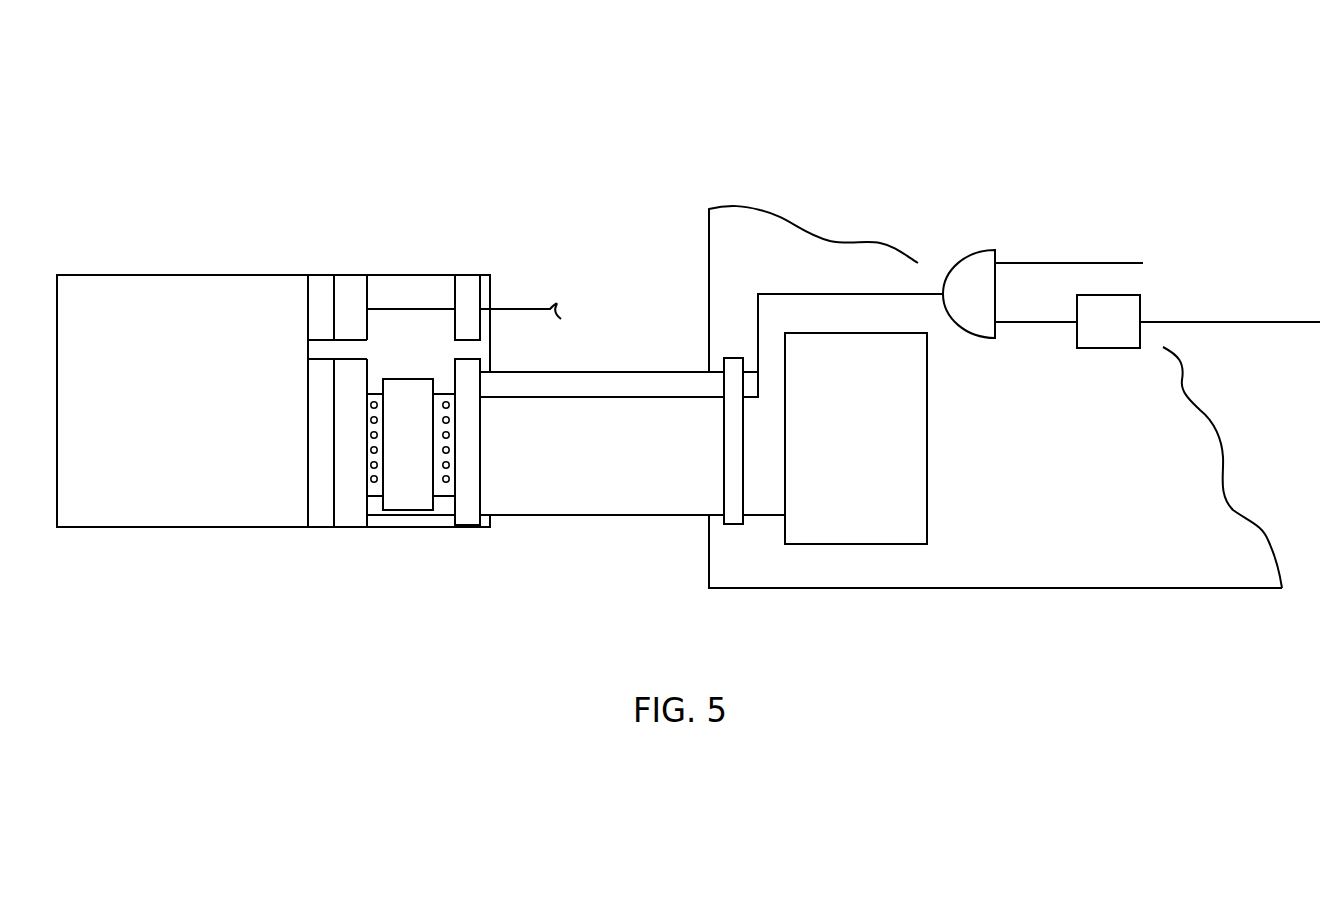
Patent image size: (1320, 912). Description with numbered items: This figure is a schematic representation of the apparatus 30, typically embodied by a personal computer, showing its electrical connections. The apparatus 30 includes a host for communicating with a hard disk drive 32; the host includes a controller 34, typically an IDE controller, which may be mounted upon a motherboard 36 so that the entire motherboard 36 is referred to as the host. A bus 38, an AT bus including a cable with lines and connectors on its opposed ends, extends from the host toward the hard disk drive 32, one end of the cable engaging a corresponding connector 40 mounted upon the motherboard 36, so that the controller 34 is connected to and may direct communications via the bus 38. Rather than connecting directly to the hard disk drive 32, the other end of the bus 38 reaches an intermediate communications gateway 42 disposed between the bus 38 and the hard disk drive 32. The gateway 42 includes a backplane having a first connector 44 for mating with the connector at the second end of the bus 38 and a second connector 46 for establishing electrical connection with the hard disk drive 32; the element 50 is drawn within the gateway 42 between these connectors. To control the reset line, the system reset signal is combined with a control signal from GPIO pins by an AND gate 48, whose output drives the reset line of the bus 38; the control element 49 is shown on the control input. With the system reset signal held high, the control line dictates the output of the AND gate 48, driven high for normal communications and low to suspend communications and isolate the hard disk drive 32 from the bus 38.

The apparatus 30 is at (668, 72).
The hard disk drive 32 is at (167, 288).
The controller 34 is at (830, 443).
The motherboard 36 is at (1160, 568).
The bus 38 is at (620, 485).
The connector 40 is at (735, 515).
The intermediate communications gateway 42 is at (432, 518).
The first connector 44 is at (463, 517).
The second connector 46 is at (350, 515).
The AND gate 48 is at (975, 273).
The switch / sensor 49 is at (335, 288).
The magnet core 50 is at (394, 450).